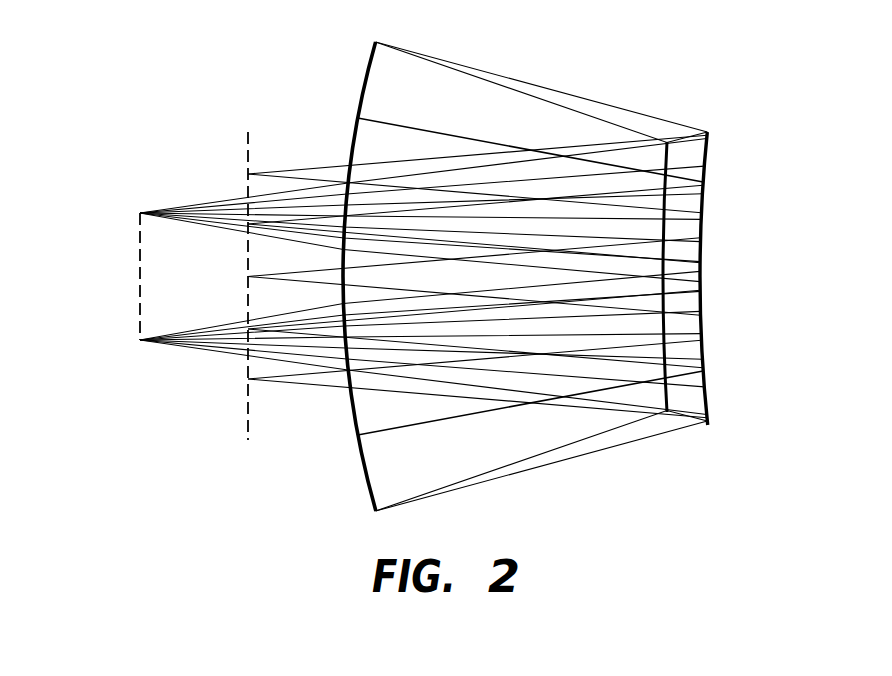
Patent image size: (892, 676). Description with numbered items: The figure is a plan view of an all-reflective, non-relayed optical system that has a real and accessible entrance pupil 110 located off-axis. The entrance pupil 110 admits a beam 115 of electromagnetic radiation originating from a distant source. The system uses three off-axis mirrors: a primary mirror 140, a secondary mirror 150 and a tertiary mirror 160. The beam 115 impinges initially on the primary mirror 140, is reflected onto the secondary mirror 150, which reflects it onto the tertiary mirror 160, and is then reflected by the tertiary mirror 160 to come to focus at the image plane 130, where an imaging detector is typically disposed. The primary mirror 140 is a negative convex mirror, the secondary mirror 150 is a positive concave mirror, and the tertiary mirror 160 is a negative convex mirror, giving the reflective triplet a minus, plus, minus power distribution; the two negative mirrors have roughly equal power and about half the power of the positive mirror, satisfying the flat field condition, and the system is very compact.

The real entrance pupil 110 is at (140, 275).
The beam 115 is at (218, 203).
The image plane 130 is at (248, 415).
The secondary mirror 150 is at (368, 72).
The tertiary mirror 160 is at (705, 172).
The primary mirror 140 is at (705, 357).